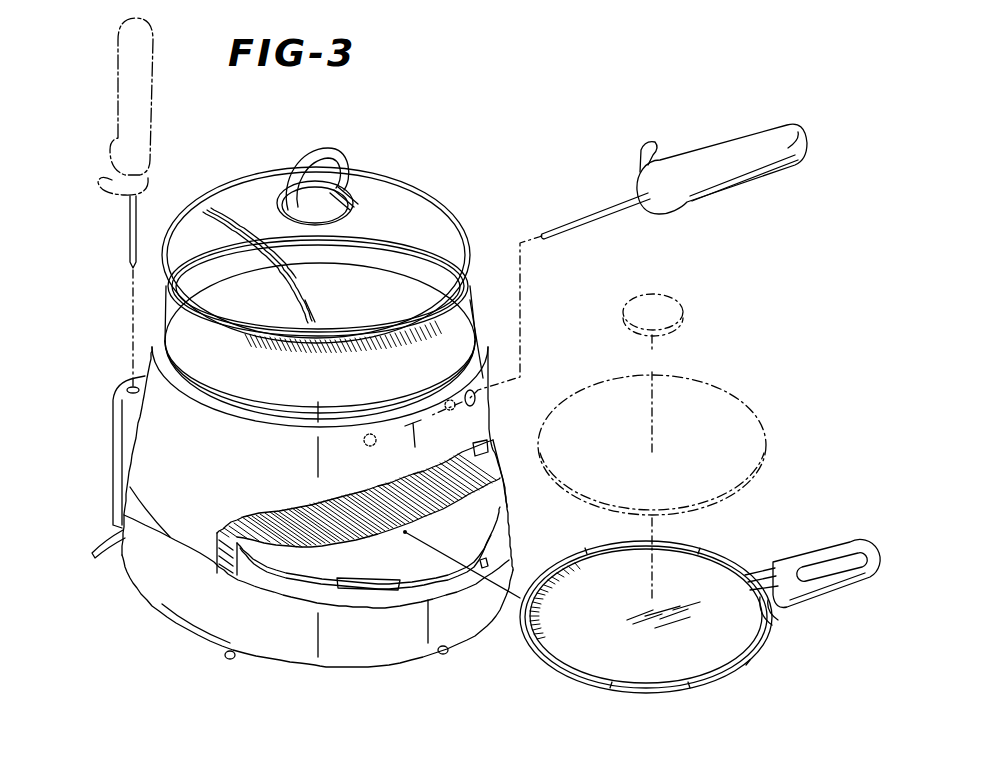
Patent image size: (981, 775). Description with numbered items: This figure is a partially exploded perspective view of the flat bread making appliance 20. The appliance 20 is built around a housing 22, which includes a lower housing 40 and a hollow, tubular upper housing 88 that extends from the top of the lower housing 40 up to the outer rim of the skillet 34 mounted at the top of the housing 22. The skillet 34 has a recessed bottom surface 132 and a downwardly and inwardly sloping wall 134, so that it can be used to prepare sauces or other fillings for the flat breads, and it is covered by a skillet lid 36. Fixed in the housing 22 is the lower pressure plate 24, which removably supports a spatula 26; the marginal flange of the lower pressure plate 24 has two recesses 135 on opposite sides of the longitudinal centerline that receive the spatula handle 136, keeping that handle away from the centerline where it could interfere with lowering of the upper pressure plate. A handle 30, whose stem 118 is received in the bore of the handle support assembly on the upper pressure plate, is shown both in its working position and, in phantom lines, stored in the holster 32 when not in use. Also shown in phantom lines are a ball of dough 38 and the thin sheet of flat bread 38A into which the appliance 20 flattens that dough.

The flat bread making appliance 20 is at (112, 262).
The housing 22 is at (163, 463).
The lower pressure plate 24 is at (327, 557).
The spatula 26 is at (757, 660).
The handle 30 is at (116, 100).
The holster 32 is at (118, 430).
The skillet 34 is at (186, 338).
The skillet lid 36 is at (417, 193).
The ball of dough 38 is at (687, 316).
The thin sheet of flat bread 38A is at (745, 402).
The lower housing 40 is at (160, 603).
The upper housing 88 is at (170, 527).
The stem 118 is at (597, 210).
The recessed bottom surface 132 is at (338, 393).
The sloping wall 134 is at (465, 311).
The recesses 135 is at (397, 582).
The spatula handle 136 is at (826, 545).